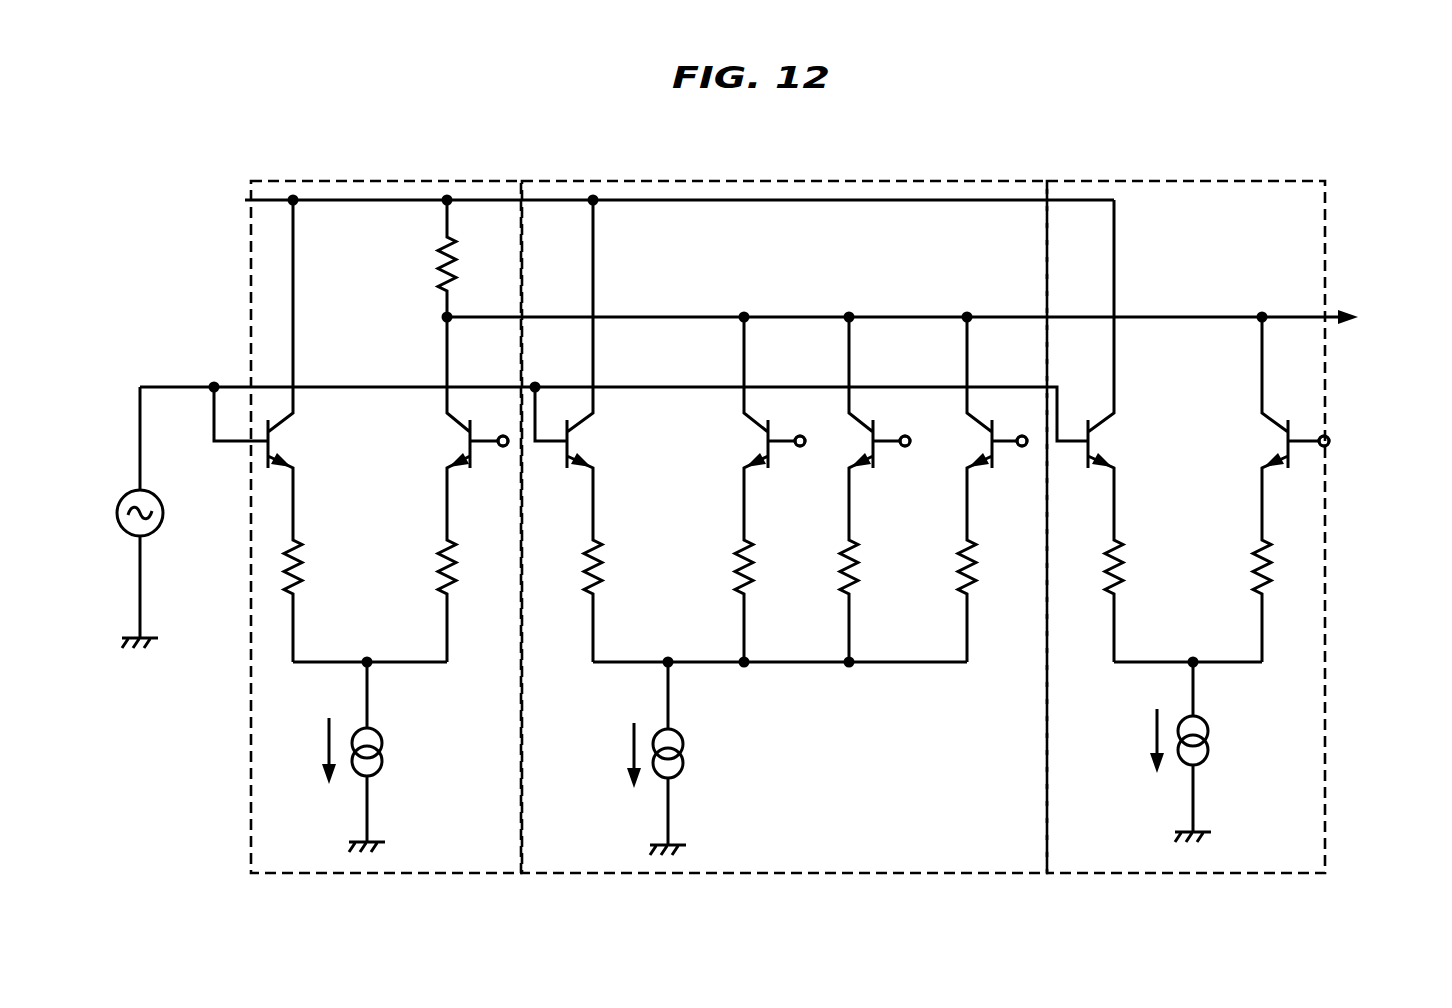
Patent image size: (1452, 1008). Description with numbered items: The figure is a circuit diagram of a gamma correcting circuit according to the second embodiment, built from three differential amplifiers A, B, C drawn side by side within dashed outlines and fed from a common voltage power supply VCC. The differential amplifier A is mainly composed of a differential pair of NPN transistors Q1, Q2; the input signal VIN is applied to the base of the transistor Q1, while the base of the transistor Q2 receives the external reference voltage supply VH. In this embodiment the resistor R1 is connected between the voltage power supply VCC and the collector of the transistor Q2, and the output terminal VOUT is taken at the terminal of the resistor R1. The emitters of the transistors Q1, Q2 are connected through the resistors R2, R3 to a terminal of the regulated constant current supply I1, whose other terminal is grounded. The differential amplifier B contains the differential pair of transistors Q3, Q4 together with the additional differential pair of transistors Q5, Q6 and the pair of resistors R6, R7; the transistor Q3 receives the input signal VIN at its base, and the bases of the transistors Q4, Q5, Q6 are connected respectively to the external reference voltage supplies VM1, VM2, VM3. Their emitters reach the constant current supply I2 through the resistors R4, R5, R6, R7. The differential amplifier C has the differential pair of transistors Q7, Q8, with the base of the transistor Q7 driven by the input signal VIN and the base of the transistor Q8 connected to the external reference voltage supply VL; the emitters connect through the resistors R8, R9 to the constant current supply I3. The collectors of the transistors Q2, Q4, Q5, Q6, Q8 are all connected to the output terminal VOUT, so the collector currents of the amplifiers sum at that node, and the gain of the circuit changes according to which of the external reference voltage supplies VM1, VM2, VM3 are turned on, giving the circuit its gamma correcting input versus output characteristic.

The differential amplifier A is at (376, 181).
The differential amplifier B is at (753, 181).
The differential amplifier C is at (1148, 181).
The voltage power supply VCC is at (642, 202).
The output terminal VOUT is at (946, 320).
The input signal VIN is at (155, 530).
The external reference voltage supply VH is at (505, 447).
The external reference voltage supply VM1 is at (802, 447).
The external reference voltage supply VM2 is at (907, 447).
The external reference voltage supply VM3 is at (1022, 448).
The external reference voltage supply VL is at (1330, 441).
The transistor Q1 is at (274, 447).
The transistor Q2 is at (464, 441).
The transistor Q3 is at (575, 447).
The transistor Q4 is at (762, 441).
The transistor Q5 is at (870, 440).
The transistor Q6 is at (988, 440).
The transistor Q7 is at (1115, 438).
The transistor Q8 is at (1271, 440).
The resistor R1 is at (450, 240).
The resistor R2 is at (302, 557).
The resistor R3 is at (438, 576).
The resistor R4 is at (602, 557).
The resistor R5 is at (735, 562).
The resistor R6 is at (840, 562).
The resistor R7 is at (958, 562).
The resistor R8 is at (1123, 557).
The resistor R9 is at (1253, 573).
The constant current supply I1 is at (383, 736).
The constant current supply I2 is at (685, 746).
The constant current supply I3 is at (1208, 735).